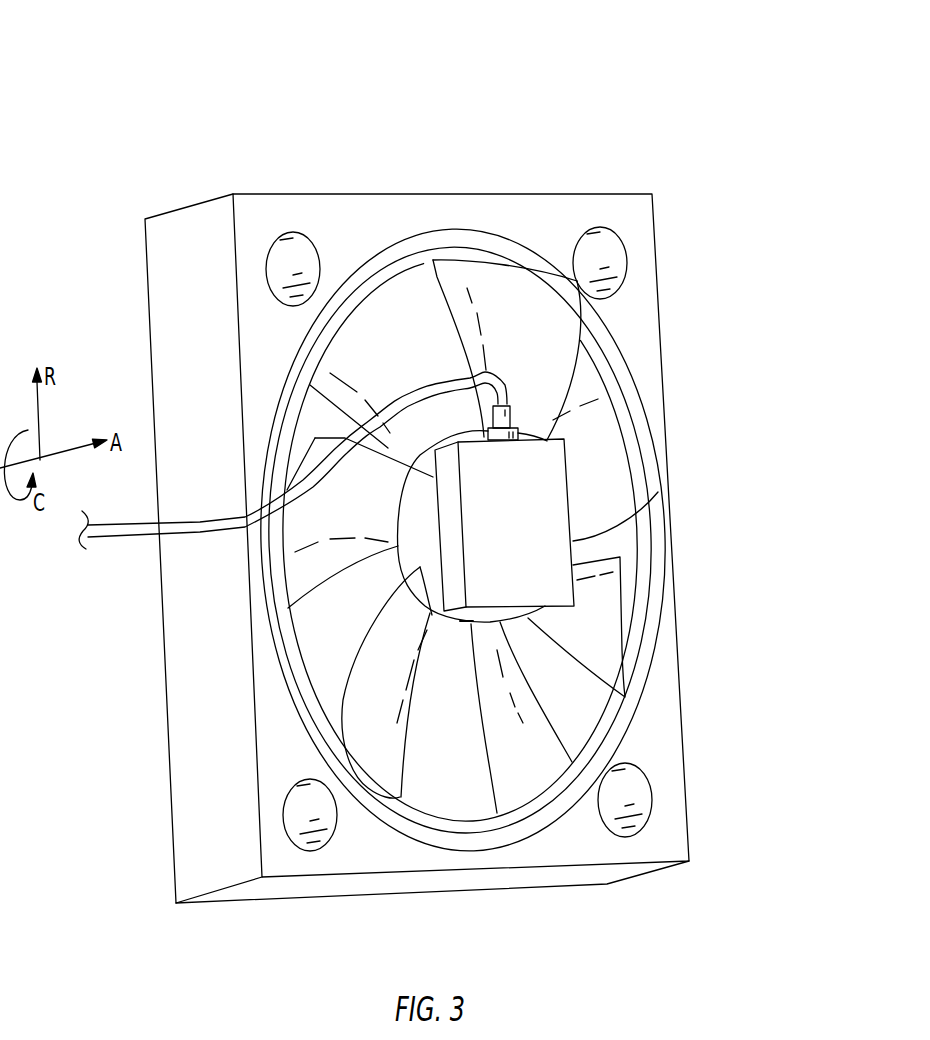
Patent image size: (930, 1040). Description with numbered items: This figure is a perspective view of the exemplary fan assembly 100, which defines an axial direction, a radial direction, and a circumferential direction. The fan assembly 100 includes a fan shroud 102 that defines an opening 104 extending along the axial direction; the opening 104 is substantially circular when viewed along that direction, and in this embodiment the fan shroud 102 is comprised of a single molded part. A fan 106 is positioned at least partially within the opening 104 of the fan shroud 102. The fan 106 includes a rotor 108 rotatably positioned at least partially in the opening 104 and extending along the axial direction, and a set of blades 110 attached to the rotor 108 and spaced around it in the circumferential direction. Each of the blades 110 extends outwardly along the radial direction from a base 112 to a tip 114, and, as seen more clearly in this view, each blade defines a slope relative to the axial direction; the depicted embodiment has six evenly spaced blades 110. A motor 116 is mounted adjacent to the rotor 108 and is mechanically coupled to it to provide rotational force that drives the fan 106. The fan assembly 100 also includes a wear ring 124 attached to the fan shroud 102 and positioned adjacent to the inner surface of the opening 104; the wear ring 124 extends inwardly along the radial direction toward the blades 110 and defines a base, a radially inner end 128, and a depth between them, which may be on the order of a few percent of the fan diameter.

The fan assembly 100 is at (157, 117).
The fan shroud 102 is at (330, 218).
The opening 104 is at (308, 647).
The fan 106 is at (378, 362).
The rotor 108 is at (398, 548).
The blades 110 is at (598, 487).
The base 112 is at (423, 605).
The tip 114 is at (386, 756).
The motor 116 is at (535, 542).
The wear ring 124 is at (492, 822).
The radially inner end 128 is at (567, 731).